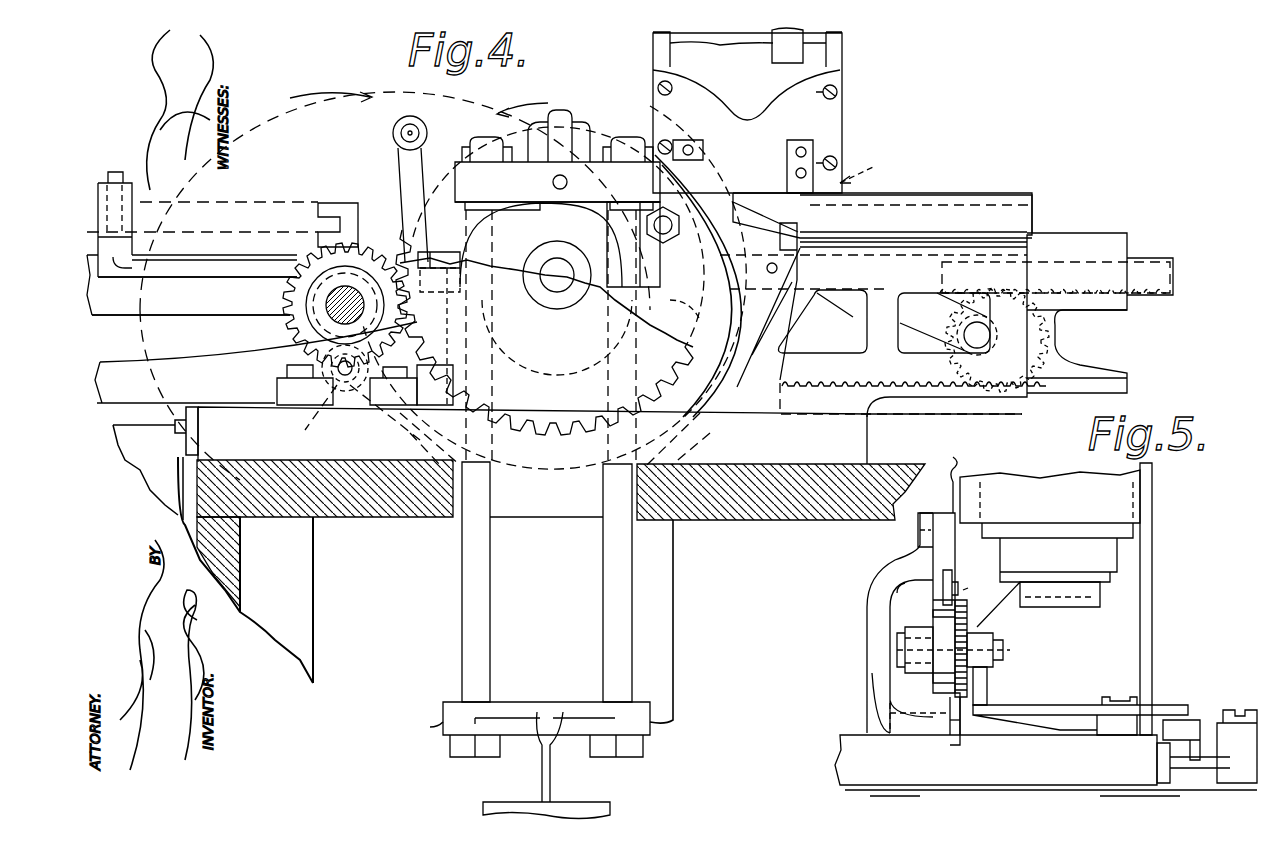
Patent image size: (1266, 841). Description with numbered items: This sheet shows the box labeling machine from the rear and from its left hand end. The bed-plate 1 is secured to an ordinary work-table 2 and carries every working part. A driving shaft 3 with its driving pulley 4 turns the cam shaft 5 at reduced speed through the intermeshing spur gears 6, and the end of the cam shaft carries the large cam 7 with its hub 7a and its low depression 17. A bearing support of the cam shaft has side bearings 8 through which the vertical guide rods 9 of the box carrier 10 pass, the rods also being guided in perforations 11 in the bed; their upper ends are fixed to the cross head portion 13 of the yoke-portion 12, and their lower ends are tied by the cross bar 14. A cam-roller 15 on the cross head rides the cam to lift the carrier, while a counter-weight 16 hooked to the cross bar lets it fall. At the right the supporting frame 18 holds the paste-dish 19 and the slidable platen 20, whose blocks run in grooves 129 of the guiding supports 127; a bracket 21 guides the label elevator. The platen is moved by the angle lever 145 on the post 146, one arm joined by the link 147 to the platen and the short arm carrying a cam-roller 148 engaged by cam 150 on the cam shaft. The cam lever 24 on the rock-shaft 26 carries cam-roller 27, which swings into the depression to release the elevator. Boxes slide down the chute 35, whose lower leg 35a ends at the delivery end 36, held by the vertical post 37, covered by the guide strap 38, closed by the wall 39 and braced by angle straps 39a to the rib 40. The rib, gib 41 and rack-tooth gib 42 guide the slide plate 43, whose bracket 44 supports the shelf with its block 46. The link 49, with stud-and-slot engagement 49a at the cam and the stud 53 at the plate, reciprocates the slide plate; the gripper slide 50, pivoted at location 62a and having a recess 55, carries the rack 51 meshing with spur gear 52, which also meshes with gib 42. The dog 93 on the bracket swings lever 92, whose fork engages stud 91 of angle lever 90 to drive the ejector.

In FIG. 4, the bed-plate 1 is at (775, 430).
In FIG. 5, the bed-plate 1 is at (1058, 742).
In FIG. 4, the work-table 2 is at (362, 500).
In FIG. 5, the work-table 2 is at (1100, 790).
In FIG. 4, the driving shaft 3 is at (330, 310).
In FIG. 4, the driving pulley 4 is at (395, 282).
In FIG. 4, the cam shaft 5 is at (558, 290).
In FIG. 4, the spur gears 6 is at (287, 295).
In FIG. 4, the large cam 7 is at (725, 350).
In FIG. 4, the gear hub 7a is at (578, 428).
In FIG. 4, the side bearings 8 is at (547, 254).
In FIG. 4, the guide rods 9 is at (470, 557).
In FIG. 4, the box carrier 10 is at (618, 115).
In FIG. 4, the perforations 11 is at (612, 465).
In FIG. 4, the yoke-portion 12 is at (542, 105).
In FIG. 4, the cross head portion 13 is at (557, 186).
In FIG. 4, the cross bar 14 is at (580, 693).
In FIG. 4, the cam-roller 15 is at (498, 117).
In FIG. 4, the counter-weight 16 is at (607, 805).
In FIG. 4, the depression 17 is at (557, 186).
In FIG. 4, the supporting frame 18 is at (125, 363).
In FIG. 4, the paste-dish 19 is at (192, 285).
In FIG. 4, the paste-applying platen 20 is at (296, 197).
In FIG. 4, the bracket 21 is at (170, 440).
In FIG. 4, the cam lever 24 is at (409, 205).
In FIG. 4, the rock-shaft 26 is at (335, 395).
In FIG. 4, the cam-roller 27 is at (392, 133).
In FIG. 4, the chute 35 is at (748, 60).
In FIG. 5, the chute 35 is at (1050, 526).
In FIG. 4, the cylinder 35a is at (551, 622).
In FIG. 4, the delivery end 36 is at (866, 165).
In FIG. 5, the vertical post 37 is at (1142, 640).
In FIG. 4, the guide strap 38 is at (776, 68).
In FIG. 4, the vertical wall 39 is at (747, 112).
In FIG. 4, the angle straps 39a is at (692, 163).
In FIG. 5, the angle straps 39a is at (960, 479).
In FIG. 4, the flange or rib 40 is at (883, 305).
In FIG. 5, the flange or rib 40 is at (865, 607).
In FIG. 5, the gib 41 is at (953, 543).
In FIG. 4, the rack-tooth gib 42 is at (962, 415).
In FIG. 5, the rack-tooth gib 42 is at (952, 740).
In FIG. 4, the slide plate 43 is at (1092, 310).
In FIG. 5, the slide plate 43 is at (935, 606).
In FIG. 5, the bracket 44 is at (977, 617).
In FIG. 4, the block 46 is at (1012, 222).
In FIG. 4, the link 49 is at (850, 303).
In FIG. 5, the link 49 is at (915, 678).
In FIG. 4, the stud and slot engagement 49a is at (676, 244).
In FIG. 4, the gripper slide 50 is at (1155, 292).
In FIG. 5, the gripper slide 50 is at (962, 590).
In FIG. 4, the rack 51 is at (1153, 275).
In FIG. 5, the rack 51 is at (968, 588).
In FIG. 4, the spur gear 52 is at (1030, 330).
In FIG. 5, the spur gear 52 is at (968, 648).
In FIG. 4, the stud 53 is at (952, 326).
In FIG. 5, the stud 53 is at (897, 650).
In FIG. 4, the recess 55 is at (685, 312).
In FIG. 4, the pivot hole location 62a is at (778, 268).
In FIG. 5, the angle lever 90 is at (1213, 718).
In FIG. 5, the stud 91 is at (1182, 718).
In FIG. 5, the lever 92 is at (1048, 705).
In FIG. 5, the dog 93 is at (990, 686).
In FIG. 4, the platen guiding supports 127 is at (341, 210).
In FIG. 4, the grooves 129 is at (318, 215).
In FIG. 4, the angle lever 145 is at (226, 266).
In FIG. 4, the vertical stud or post 146 is at (435, 385).
In FIG. 4, the link 147 is at (132, 218).
In FIG. 4, the cam-roller 148 is at (438, 318).
In FIG. 4, the cam 150 is at (541, 245).